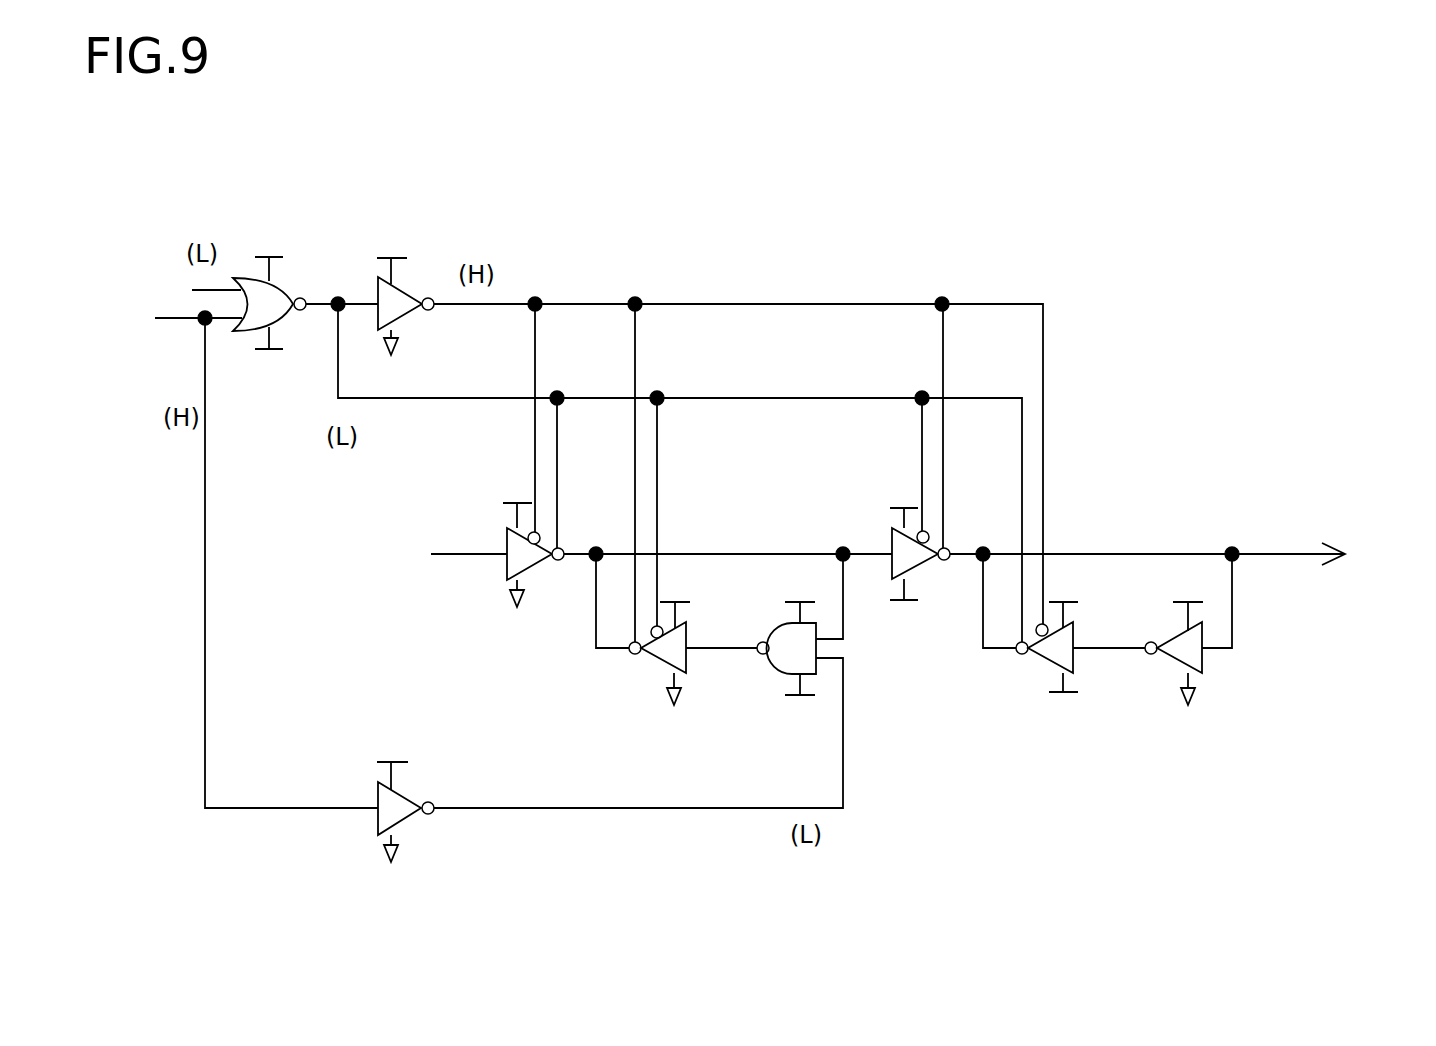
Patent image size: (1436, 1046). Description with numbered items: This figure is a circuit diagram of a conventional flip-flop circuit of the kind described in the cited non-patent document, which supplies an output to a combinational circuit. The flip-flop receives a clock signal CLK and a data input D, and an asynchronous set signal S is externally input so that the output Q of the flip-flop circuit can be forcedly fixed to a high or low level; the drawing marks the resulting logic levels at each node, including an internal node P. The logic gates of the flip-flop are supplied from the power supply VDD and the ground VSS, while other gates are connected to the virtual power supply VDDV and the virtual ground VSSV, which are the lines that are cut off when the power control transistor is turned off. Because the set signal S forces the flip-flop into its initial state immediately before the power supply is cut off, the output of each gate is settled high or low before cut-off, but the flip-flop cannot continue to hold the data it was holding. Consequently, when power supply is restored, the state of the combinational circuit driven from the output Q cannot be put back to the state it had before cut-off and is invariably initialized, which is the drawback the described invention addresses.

The clock signal input CLK is at (181, 290).
The set signal input S is at (247, 556).
The data input D(X) D is at (431, 556).
The internal node P(L) P is at (728, 542).
The output Q(H) Q is at (1185, 557).
The power supply VDD is at (675, 424).
The virtual power supply VDDV is at (794, 506).
The ground VSS is at (794, 613).
The virtual ground VSSV is at (674, 531).